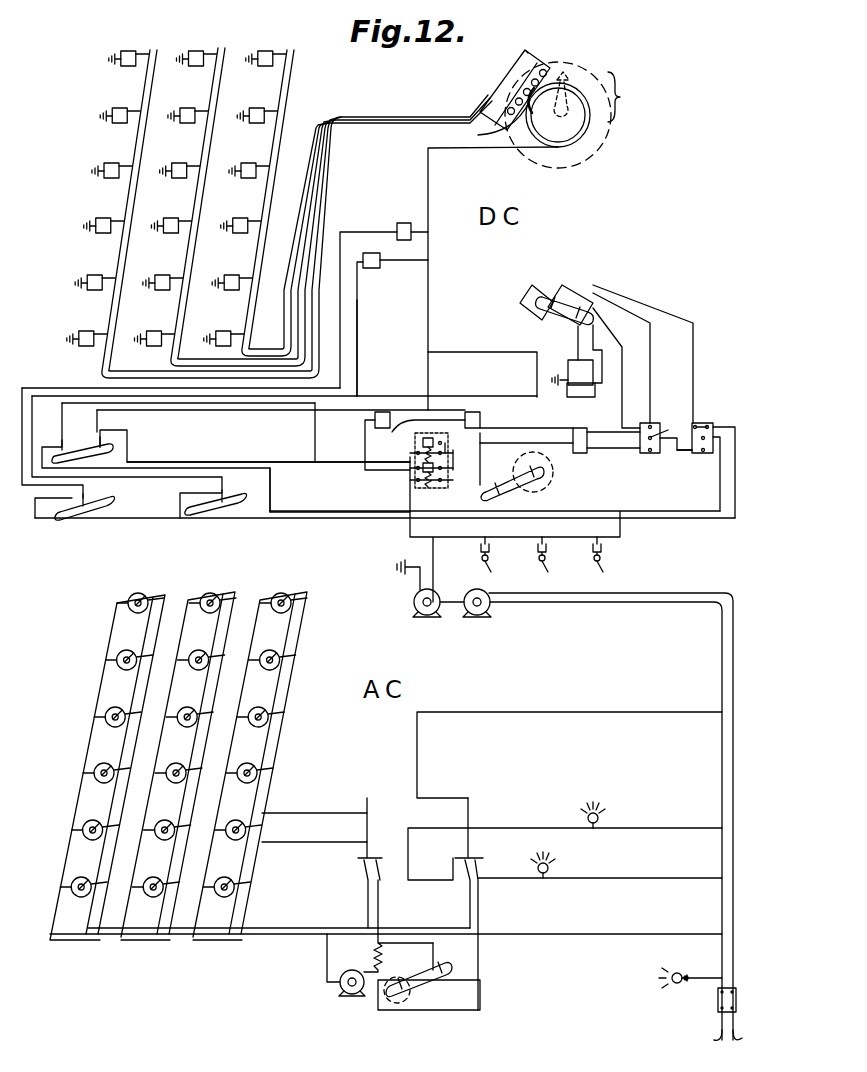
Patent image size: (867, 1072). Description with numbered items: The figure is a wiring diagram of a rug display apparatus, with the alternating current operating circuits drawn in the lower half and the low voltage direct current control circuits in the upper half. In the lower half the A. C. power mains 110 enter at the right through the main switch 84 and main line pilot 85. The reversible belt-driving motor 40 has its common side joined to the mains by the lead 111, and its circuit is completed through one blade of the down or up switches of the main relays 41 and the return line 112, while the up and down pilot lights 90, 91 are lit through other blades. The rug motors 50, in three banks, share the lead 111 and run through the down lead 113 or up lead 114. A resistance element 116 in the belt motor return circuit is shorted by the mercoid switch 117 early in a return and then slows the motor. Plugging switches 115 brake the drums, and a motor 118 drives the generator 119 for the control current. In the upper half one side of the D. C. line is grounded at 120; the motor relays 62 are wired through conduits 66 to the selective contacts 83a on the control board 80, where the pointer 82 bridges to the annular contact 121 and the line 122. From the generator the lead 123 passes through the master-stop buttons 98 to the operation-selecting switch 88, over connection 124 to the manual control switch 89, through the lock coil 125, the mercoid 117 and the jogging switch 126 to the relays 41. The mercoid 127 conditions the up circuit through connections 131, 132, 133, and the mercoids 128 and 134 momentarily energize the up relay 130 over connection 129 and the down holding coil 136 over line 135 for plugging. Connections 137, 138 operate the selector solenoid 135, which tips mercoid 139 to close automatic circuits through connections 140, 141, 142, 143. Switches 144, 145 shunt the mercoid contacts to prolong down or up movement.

The reversible belt-driving motor 40 is at (339, 984).
The main relays 41 is at (414, 711).
The rug motors 50 is at (139, 614).
The motor relays 62 is at (128, 52).
The conduits 66 is at (137, 162).
The control board 80 is at (628, 97).
The pointer 82 is at (567, 103).
The selective contacts 83a is at (514, 97).
The main switch 84 is at (737, 998).
The main line pilot 85 is at (677, 984).
The operation-selecting switch 88 is at (703, 422).
The manual control switch 89 is at (657, 435).
The up pilot light 90 is at (586, 818).
The down pilot light 91 is at (552, 866).
The master-stop buttons 98 is at (466, 523).
The A. C. power mains 110 is at (742, 663).
The lead 111 is at (295, 936).
The return line 112 is at (418, 764).
The down lead 113 is at (294, 690).
The up lead 114 is at (284, 683).
The plugging switch 115 is at (328, 814).
The resistance element 116 is at (372, 960).
The mercoid switch 117 is at (515, 490).
The motor 118 is at (480, 613).
The generator 119 is at (425, 613).
The ground 120 is at (399, 579).
The annular contact 121 is at (582, 140).
The line 122 is at (429, 303).
The lead 123 is at (320, 519).
The connection 124 is at (687, 453).
The lock coil 125 is at (580, 453).
The jogging switch 126 is at (408, 497).
The mercoid switch 127 is at (82, 450).
The mercoid switch 128 is at (236, 505).
The connection 129 is at (358, 345).
The relay 130 is at (372, 268).
The connection 131 is at (197, 412).
The connection 132 is at (306, 462).
The connection 133 is at (366, 468).
The mercoid 134 is at (72, 520).
The selector solenoid 135 is at (68, 388).
The holding coil 136 is at (397, 233).
The connection 137 is at (271, 490).
The connection 138 is at (352, 395).
The mercoid switch 139 is at (545, 312).
The connection 140 is at (672, 320).
The connection 141 is at (601, 347).
The connection 142 is at (482, 374).
The connection 143 is at (651, 380).
The switch 144 is at (507, 432).
The switch 145 is at (313, 437).